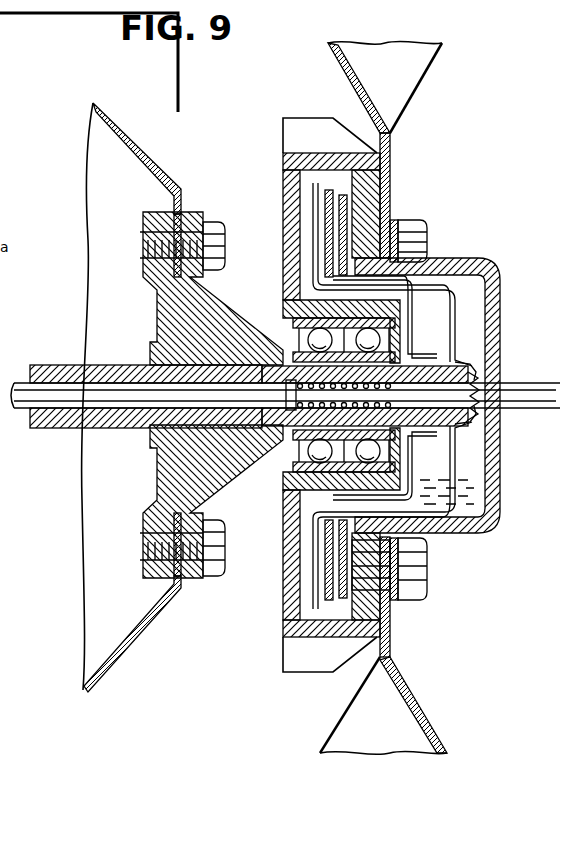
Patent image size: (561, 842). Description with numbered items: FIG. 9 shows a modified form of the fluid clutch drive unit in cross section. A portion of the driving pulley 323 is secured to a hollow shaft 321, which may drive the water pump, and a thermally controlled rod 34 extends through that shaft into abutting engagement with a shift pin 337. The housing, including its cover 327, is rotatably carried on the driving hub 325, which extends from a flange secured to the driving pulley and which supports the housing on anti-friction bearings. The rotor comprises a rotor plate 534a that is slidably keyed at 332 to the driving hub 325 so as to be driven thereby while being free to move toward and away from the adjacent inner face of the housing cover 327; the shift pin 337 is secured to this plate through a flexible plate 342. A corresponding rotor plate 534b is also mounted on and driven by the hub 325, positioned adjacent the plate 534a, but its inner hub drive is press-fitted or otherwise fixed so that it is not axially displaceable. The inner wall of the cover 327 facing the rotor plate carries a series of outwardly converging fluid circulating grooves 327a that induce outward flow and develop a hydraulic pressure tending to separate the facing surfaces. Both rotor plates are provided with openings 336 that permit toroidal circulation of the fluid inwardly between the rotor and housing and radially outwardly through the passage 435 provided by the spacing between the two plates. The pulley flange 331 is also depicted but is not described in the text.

The driving pulley portion 323 is at (150, 157).
The rotor plate 534b is at (327, 237).
The openings 336 is at (325, 272).
The hollow shaft 321 is at (111, 365).
The thermally controlled rod 34 is at (108, 397).
The pulley flange 331 is at (417, 70).
The passage 435 is at (380, 180).
The rotor plate 534a is at (362, 220).
The fluid circulating grooves 327a is at (407, 203).
The housing cover 327 is at (365, 228).
The sliding key 332 is at (440, 360).
The hub 325 is at (467, 377).
The shift pin 337 is at (450, 396).
The flexible plate 342 is at (477, 415).